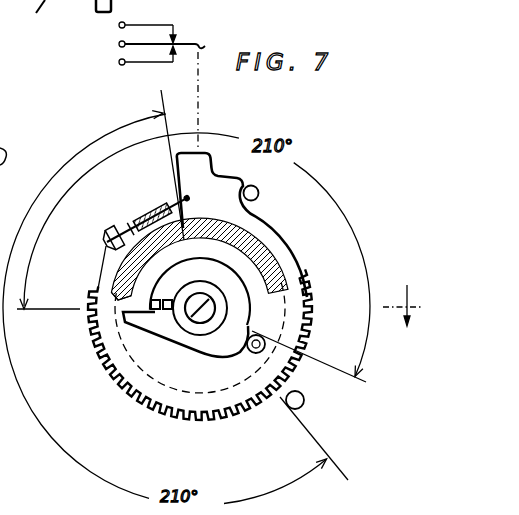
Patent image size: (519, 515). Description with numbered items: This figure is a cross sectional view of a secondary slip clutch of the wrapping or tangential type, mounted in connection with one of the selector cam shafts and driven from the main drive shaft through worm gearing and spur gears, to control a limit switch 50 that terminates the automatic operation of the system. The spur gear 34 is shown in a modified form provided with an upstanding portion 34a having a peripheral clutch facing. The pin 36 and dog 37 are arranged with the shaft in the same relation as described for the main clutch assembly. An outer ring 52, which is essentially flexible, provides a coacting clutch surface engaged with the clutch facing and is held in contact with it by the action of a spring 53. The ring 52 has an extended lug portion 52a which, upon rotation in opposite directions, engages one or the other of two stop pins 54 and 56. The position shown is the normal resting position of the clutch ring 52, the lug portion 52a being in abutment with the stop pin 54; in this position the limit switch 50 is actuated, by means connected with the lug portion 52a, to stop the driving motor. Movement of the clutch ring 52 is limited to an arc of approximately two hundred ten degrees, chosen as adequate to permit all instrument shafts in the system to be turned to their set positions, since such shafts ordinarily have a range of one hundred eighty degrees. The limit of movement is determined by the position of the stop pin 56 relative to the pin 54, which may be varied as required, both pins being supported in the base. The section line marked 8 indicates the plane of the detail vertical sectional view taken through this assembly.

The section line 8- 8 is at (409, 305).
The limit switch 50 is at (204, 24).
The spur gear 34 is at (100, 337).
The upstanding portion 34a is at (117, 280).
The dog 37 is at (157, 327).
The outer ring 52 is at (290, 262).
The extended lug portion 52a is at (180, 176).
The spring 53 is at (134, 217).
The stop pin 54 is at (259, 195).
The pin 36 is at (249, 352).
The stop pin 56 is at (305, 401).